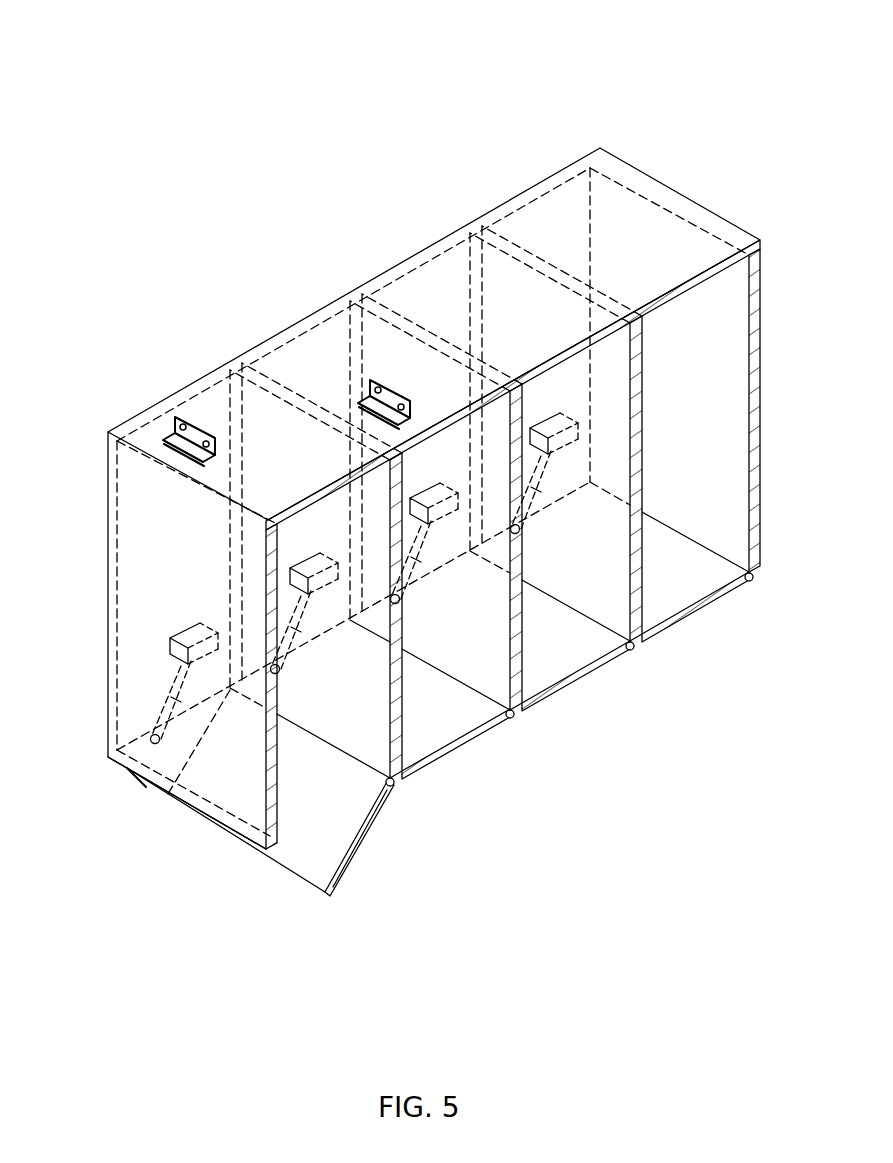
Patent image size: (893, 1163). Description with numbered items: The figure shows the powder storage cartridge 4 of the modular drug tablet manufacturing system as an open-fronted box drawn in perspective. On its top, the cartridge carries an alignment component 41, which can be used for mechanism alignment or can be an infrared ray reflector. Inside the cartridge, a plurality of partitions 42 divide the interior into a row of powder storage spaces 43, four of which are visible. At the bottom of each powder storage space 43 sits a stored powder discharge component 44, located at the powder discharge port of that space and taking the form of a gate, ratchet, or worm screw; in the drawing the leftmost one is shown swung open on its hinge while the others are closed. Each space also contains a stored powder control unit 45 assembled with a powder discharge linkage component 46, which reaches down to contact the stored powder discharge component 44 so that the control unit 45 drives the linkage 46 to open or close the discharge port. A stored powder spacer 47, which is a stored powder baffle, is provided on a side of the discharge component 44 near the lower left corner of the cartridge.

The powder storage cartridge 4 is at (233, 173).
The alignment component 41 is at (197, 440).
The partition 42 is at (402, 690).
The powder storage space 43 is at (335, 702).
The stored powder discharge component 44 is at (362, 834).
The stored powder control unit 45 is at (183, 638).
The powder discharge linkage component 46 is at (173, 690).
The stored powder spacer 47 is at (142, 787).